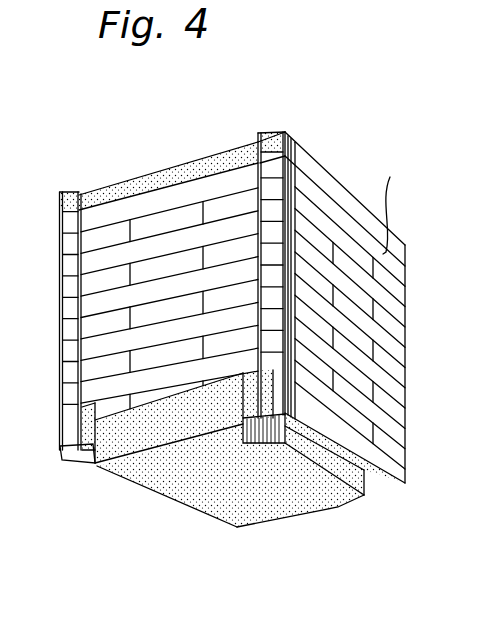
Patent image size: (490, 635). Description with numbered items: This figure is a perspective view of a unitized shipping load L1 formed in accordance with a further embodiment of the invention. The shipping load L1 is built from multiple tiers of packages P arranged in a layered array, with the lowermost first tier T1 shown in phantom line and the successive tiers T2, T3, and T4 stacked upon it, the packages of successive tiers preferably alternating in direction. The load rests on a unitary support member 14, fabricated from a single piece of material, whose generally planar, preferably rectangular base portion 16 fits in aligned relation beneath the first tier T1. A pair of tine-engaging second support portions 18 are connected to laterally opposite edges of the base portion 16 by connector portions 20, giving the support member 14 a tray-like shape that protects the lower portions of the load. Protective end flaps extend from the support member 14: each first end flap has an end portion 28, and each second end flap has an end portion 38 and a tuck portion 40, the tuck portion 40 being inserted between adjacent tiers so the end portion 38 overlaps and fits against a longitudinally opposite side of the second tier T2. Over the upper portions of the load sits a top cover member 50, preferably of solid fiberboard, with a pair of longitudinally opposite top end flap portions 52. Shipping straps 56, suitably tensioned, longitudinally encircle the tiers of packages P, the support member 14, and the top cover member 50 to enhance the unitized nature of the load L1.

The top cover member 50 is at (213, 139).
The top end flap portions 52 is at (389, 258).
The shipping straps 56 is at (80, 270).
The packages P is at (317, 195).
The shipping load L1 is at (409, 227).
The tuck portion 40 is at (107, 413).
The end portion 38 is at (72, 428).
The second support portions 18 is at (75, 458).
The end portion 28 is at (169, 418).
The base portion 16 is at (230, 475).
The connector portions 20 is at (325, 476).
The support member 14 is at (340, 510).
The first tier T1 is at (372, 497).
The second tier T2 is at (408, 472).
The third tier T3 is at (408, 454).
The fourth tier T4 is at (409, 432).